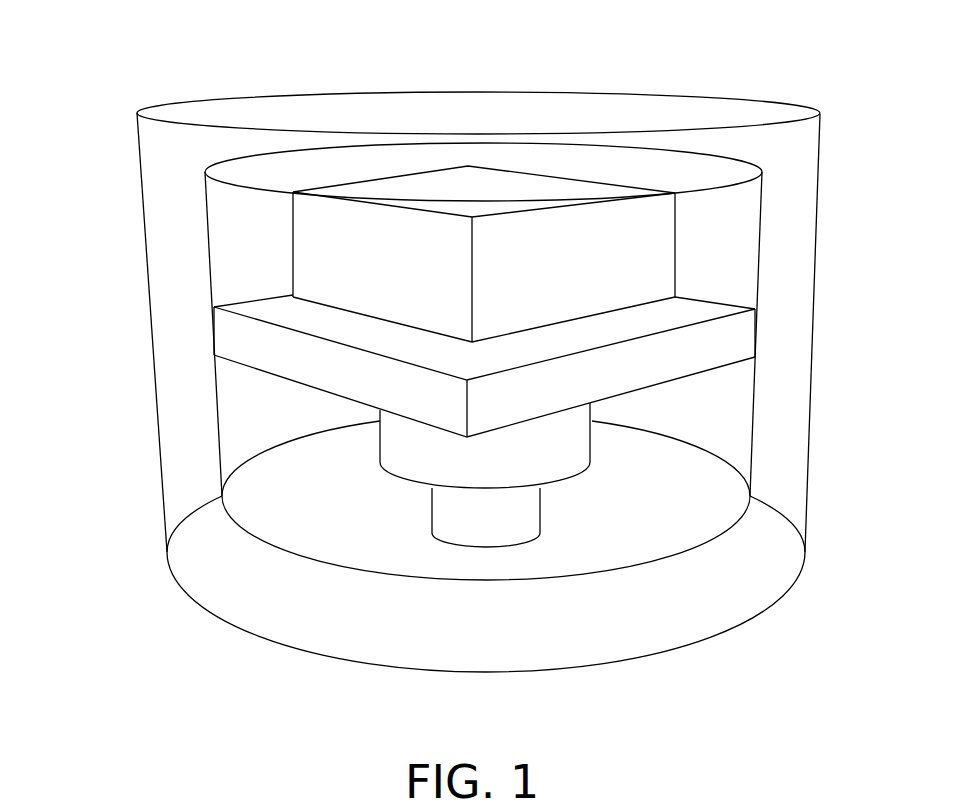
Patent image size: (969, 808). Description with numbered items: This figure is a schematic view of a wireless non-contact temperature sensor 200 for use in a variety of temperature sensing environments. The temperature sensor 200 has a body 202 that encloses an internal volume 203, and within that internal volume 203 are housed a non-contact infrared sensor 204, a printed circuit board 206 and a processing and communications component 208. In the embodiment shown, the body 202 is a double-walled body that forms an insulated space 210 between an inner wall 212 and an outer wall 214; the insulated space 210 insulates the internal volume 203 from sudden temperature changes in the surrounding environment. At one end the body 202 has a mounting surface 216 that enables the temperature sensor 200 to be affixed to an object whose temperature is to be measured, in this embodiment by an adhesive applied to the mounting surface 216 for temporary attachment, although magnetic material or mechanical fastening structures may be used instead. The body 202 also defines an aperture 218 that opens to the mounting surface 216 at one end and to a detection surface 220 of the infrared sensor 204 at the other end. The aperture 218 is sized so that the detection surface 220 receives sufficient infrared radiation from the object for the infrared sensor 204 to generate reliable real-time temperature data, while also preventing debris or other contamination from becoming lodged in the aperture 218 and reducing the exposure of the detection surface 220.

The wireless non-contact temperature sensor 200 is at (97, 65).
The body 202 is at (469, 281).
The internal volume 203 is at (722, 400).
The non-contact infrared sensor 204 is at (580, 442).
The printed circuit board 206 is at (740, 334).
The processing and communications component 208 is at (667, 254).
The insulated space 210 is at (195, 410).
The inner wall 212 is at (205, 217).
The outer wall 214 is at (149, 283).
The mounting surface 216 is at (709, 649).
The aperture 218 is at (520, 519).
The detection surface 220 is at (413, 480).